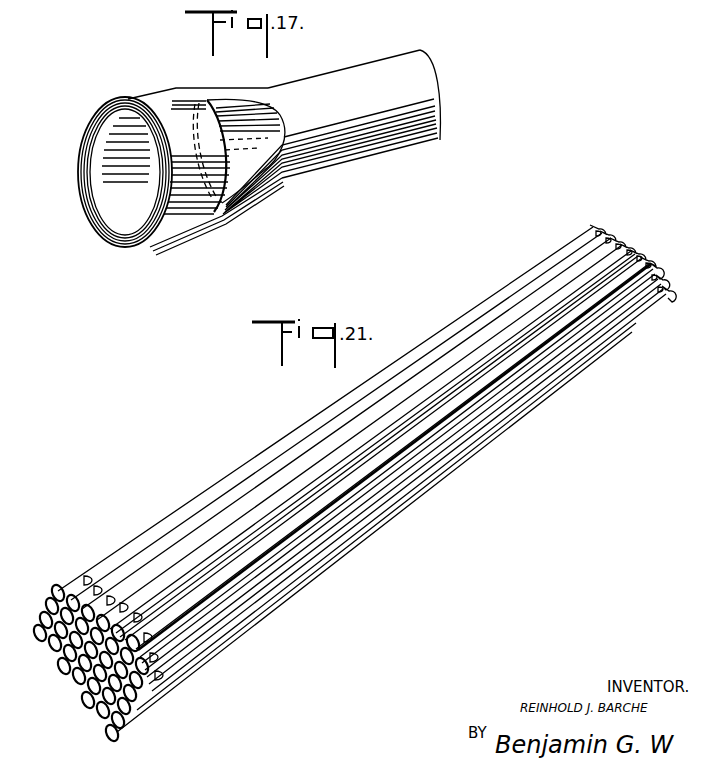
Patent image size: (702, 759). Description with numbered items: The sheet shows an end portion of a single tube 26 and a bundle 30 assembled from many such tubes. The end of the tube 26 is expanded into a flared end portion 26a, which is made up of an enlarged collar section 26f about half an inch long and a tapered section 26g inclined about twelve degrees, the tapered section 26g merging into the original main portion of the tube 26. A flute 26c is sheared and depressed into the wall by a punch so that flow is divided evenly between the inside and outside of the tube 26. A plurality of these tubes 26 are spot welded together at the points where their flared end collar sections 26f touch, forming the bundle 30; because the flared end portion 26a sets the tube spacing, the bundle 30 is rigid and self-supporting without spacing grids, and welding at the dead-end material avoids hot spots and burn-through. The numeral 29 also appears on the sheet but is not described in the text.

In FIG. 17, the multi-layer tube 26 is at (341, 165).
In FIG. 21, the multi-layer tube 26 is at (372, 487).
In FIG. 17, the outer layer of tube 26a is at (82, 218).
In FIG. 17, the inner layer of tube 26c is at (245, 130).
In FIG. 17, the layer of tube 26f is at (176, 228).
In FIG. 17, the layer of tube 26g is at (245, 195).
In FIG. 21, the bundle of tubes 30 is at (353, 484).
In FIG. 21, the element of adjacent figure 29 is at (636, 2).